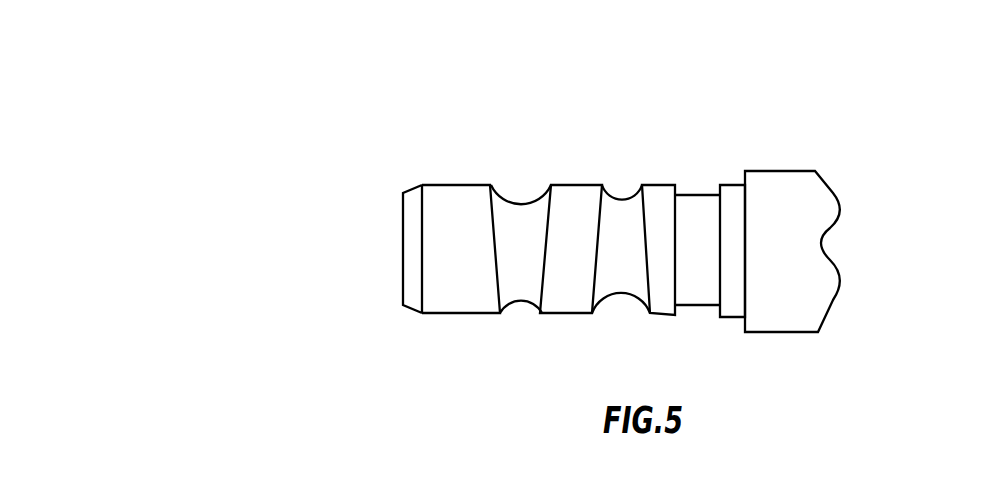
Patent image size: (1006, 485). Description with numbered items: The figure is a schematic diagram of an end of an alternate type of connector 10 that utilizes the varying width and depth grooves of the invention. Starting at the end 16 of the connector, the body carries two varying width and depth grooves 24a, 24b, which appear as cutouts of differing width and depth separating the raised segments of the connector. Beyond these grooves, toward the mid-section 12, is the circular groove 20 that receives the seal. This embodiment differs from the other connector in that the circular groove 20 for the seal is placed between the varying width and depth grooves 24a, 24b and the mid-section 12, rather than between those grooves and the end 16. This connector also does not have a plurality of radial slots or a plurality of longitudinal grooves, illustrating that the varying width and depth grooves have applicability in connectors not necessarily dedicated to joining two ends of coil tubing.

The dental implant 10 is at (875, 97).
The mid-section 12 is at (770, 170).
The end 16 is at (432, 183).
The circular groove 20 is at (697, 194).
The varying width and depth groove 24a is at (514, 205).
The varying width and depth groove 24b is at (618, 198).